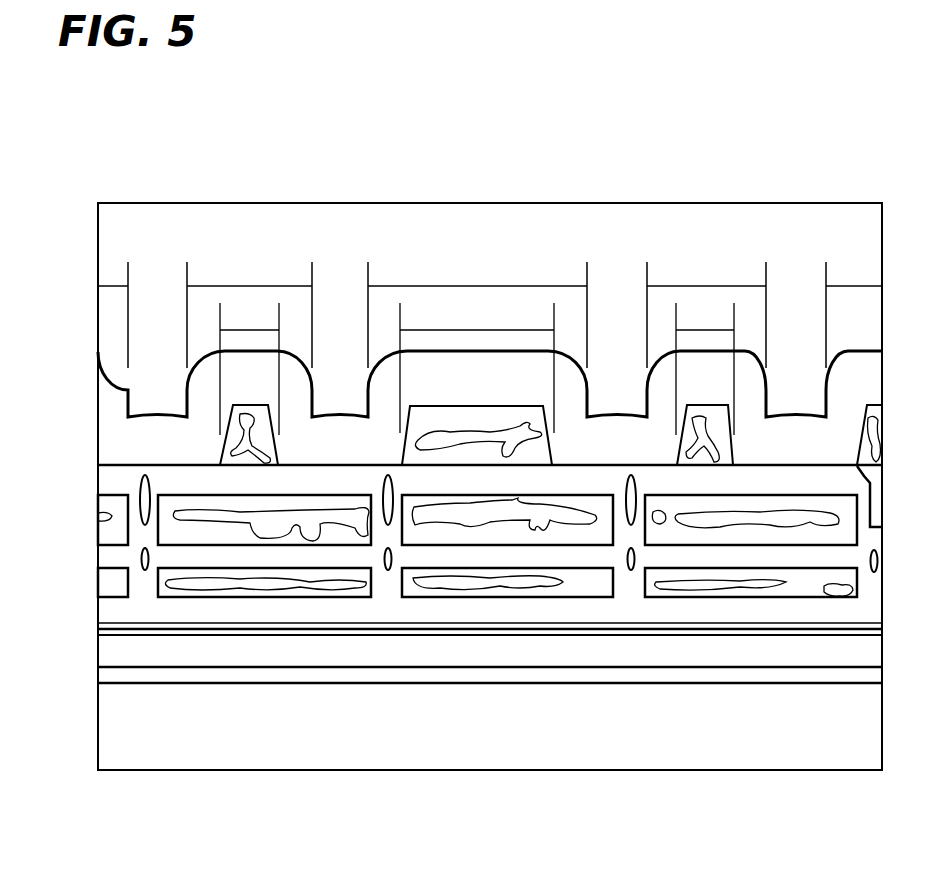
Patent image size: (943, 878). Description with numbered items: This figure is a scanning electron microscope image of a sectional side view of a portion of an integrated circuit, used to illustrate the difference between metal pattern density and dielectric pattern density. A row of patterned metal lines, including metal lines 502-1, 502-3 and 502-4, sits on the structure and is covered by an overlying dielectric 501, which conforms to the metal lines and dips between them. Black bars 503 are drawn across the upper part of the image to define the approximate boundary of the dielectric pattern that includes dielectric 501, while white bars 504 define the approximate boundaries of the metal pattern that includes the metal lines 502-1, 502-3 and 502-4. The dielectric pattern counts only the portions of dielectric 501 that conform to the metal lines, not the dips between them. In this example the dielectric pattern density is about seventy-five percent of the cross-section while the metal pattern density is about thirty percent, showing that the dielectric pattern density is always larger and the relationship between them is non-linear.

The dielectric 501 is at (107, 411).
The metal line 502-1 is at (231, 407).
The metal line 502-3 is at (433, 418).
The metal line 502-4 is at (710, 418).
The black bars 503 is at (113, 284).
The white bars 504 is at (247, 328).